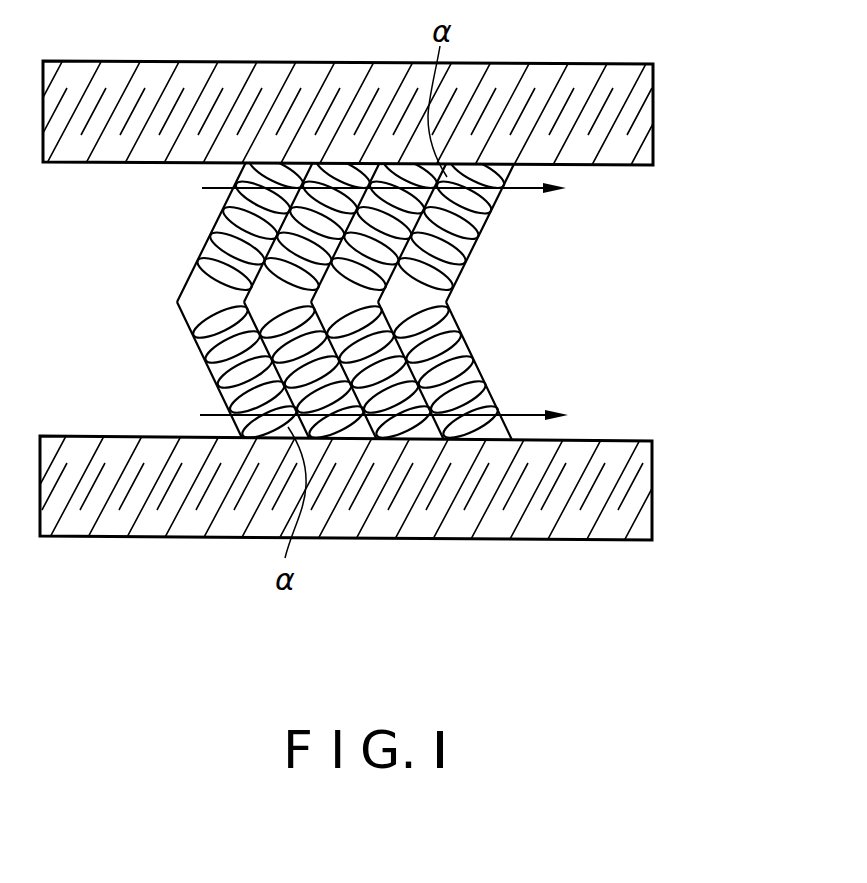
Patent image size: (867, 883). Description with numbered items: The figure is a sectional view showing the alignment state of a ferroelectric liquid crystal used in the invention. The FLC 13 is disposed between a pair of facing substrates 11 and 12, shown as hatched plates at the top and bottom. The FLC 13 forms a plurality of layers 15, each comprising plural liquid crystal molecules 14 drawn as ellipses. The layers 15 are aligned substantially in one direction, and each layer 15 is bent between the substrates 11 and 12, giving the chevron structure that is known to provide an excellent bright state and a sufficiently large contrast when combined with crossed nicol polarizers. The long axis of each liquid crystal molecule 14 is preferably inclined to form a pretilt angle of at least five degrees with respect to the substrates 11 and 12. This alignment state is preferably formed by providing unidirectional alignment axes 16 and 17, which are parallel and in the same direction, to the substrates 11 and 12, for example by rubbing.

The substrate 11 is at (654, 103).
The substrate 12 is at (653, 488).
The FLC 13 is at (419, 297).
The liquid crystal molecule 14 is at (200, 328).
The layer 15 is at (204, 245).
The unidirectional alignment axis 16 is at (530, 190).
The unidirectional alignment axis 17 is at (525, 413).